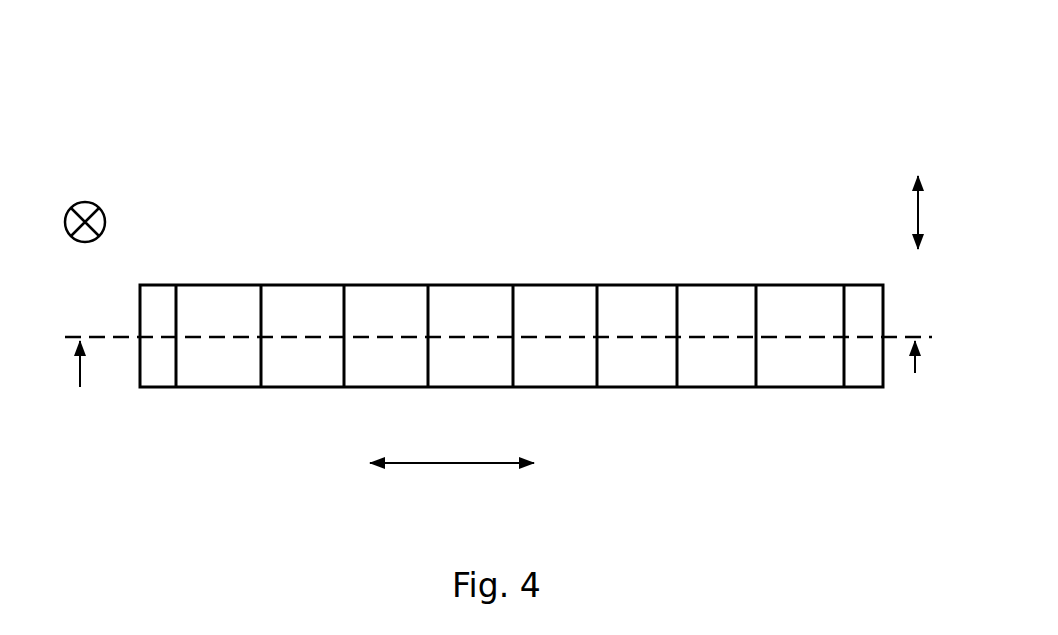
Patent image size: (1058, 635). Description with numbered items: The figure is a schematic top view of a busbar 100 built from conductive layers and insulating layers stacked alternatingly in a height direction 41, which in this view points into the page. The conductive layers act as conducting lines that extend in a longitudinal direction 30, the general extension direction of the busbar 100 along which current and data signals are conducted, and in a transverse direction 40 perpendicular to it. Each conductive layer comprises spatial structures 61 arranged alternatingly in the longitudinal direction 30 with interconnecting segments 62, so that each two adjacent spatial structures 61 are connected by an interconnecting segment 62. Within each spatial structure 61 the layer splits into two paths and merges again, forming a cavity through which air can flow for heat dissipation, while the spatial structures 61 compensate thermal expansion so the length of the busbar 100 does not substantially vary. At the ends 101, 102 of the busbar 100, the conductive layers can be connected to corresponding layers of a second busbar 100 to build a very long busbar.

The busbar 100 is at (764, 98).
The height direction 41 is at (80, 191).
The spatial structure 61 is at (215, 269).
The interconnecting segment 62 is at (290, 269).
The end of the busbar 101 is at (115, 365).
The end of the busbar 102 is at (892, 375).
The transverse direction 40 is at (941, 212).
The longitudinal direction 30 is at (452, 484).